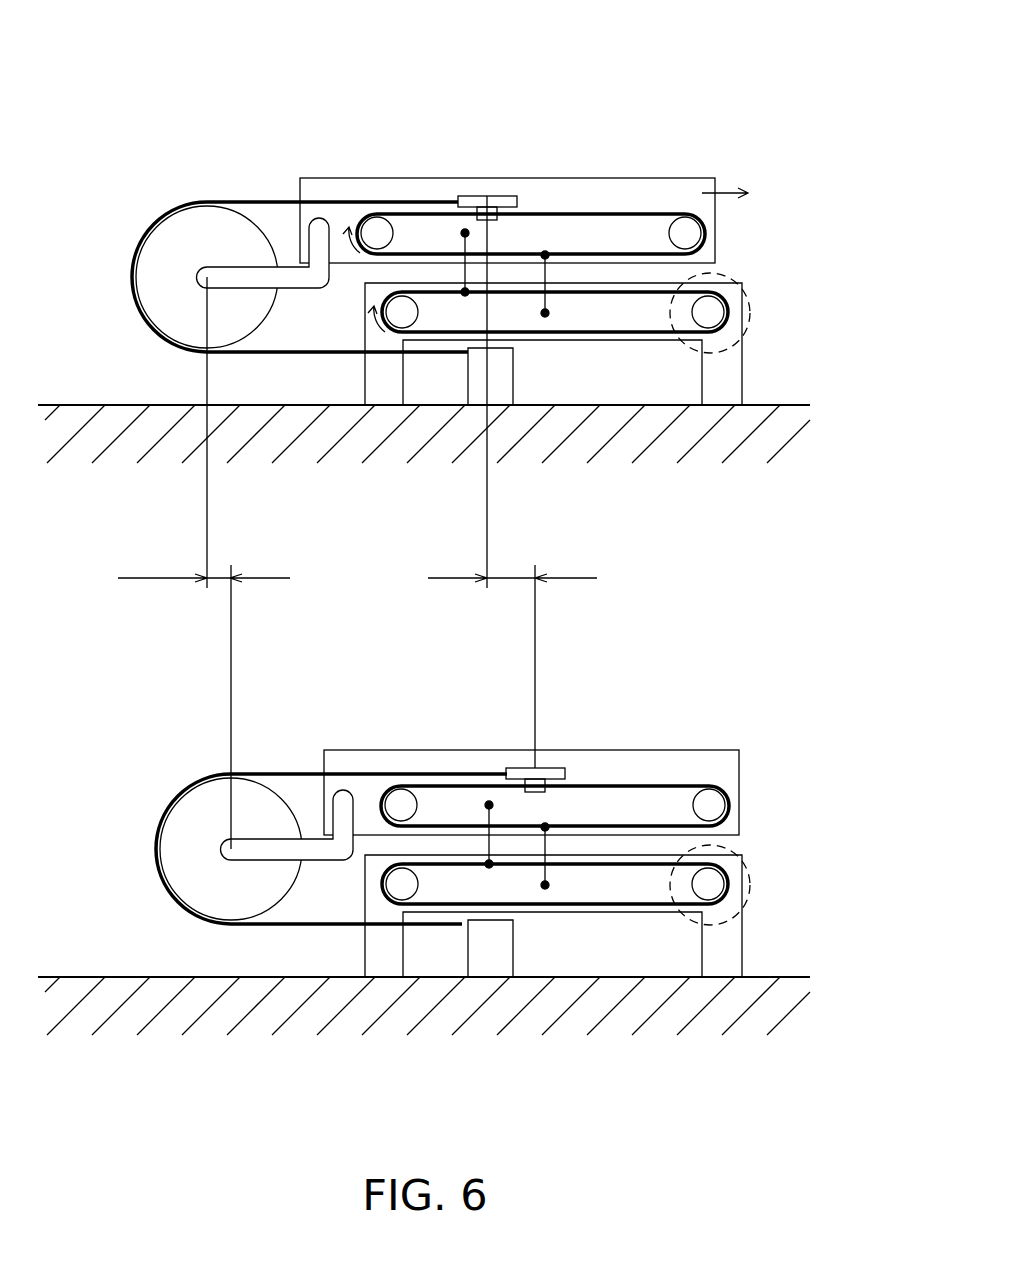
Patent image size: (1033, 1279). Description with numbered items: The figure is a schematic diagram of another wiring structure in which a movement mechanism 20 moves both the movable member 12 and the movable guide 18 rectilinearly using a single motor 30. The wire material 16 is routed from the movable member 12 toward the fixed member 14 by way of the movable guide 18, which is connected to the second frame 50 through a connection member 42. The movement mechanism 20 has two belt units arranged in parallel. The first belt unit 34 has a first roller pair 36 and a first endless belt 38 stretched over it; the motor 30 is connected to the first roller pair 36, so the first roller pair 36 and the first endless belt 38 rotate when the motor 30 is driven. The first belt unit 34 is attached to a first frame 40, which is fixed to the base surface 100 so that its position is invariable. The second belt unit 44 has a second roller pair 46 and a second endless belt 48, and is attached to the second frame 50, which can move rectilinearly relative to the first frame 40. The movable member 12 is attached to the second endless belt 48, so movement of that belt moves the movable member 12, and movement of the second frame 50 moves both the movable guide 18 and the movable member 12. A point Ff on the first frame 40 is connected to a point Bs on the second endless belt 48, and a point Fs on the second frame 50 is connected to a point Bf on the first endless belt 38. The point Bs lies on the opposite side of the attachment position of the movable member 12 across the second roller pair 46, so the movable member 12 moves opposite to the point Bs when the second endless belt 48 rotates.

The base surface 100 is at (86, 403).
The movable member 12 is at (502, 196).
The fixed member 14 is at (513, 377).
The wire material 16 is at (297, 203).
The movable guide 18 is at (176, 247).
The movement mechanism 20 is at (615, 106).
The motor 30 is at (723, 348).
The first belt unit 34 is at (610, 690).
The first roller pair 36 is at (715, 315).
The first endless belt 38 is at (611, 337).
The first frame 40 is at (365, 385).
The connection member 42 is at (237, 277).
The second belt unit 44 is at (599, 482).
The second roller pair 46 is at (693, 238).
The second endless belt 48 is at (555, 212).
The second frame 50 is at (628, 192).
The point on second frame Fs is at (465, 233).
The point on first endless belt Bf is at (465, 296).
The point on second endless belt Bs is at (545, 255).
The point on first frame Ff is at (545, 318).